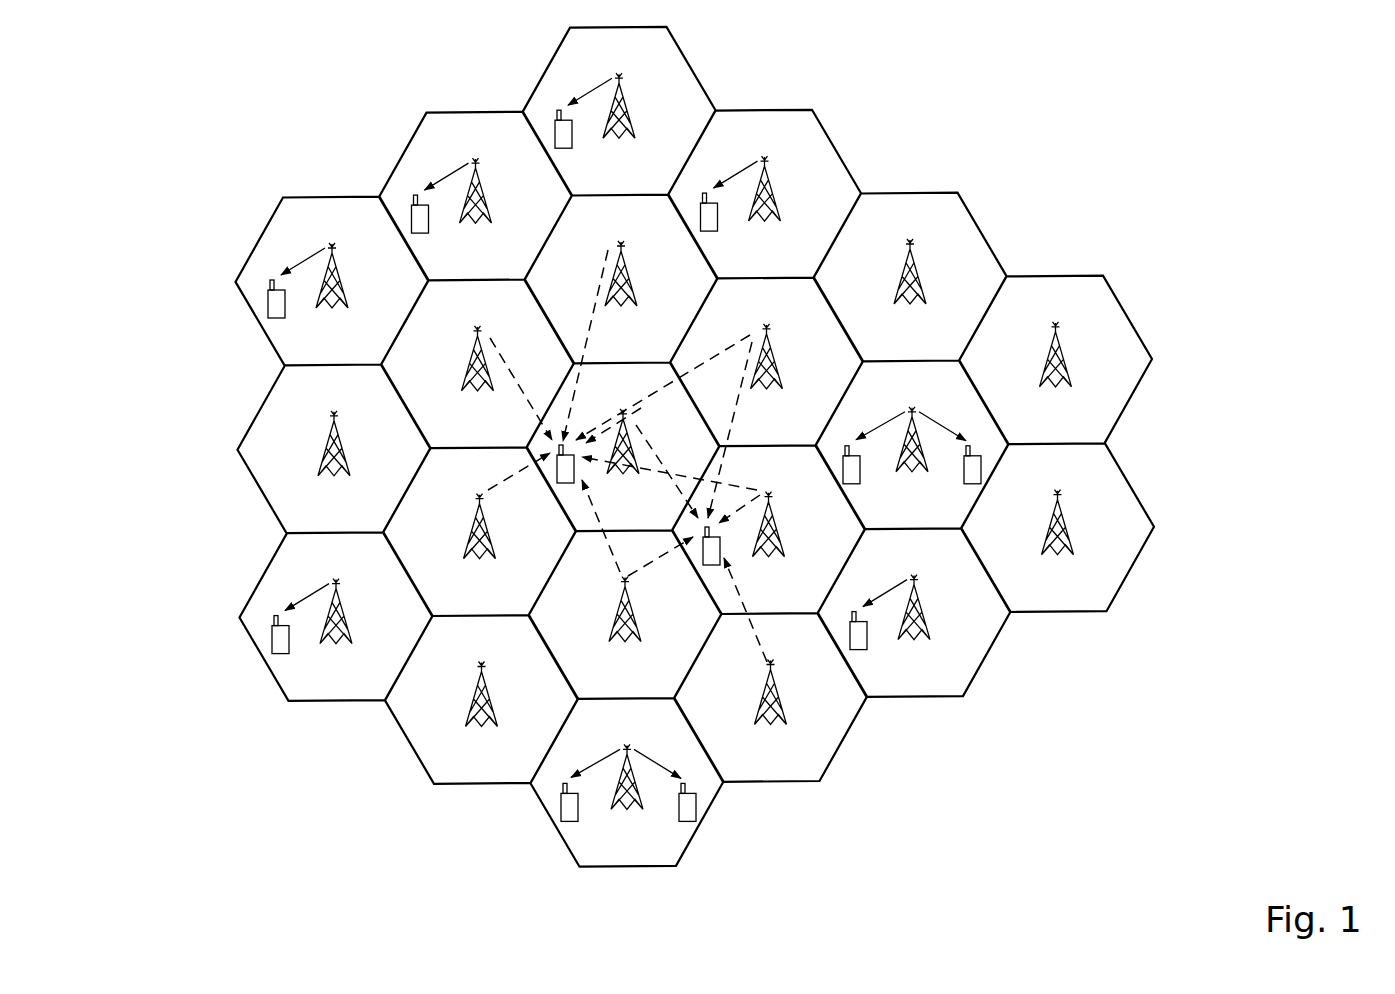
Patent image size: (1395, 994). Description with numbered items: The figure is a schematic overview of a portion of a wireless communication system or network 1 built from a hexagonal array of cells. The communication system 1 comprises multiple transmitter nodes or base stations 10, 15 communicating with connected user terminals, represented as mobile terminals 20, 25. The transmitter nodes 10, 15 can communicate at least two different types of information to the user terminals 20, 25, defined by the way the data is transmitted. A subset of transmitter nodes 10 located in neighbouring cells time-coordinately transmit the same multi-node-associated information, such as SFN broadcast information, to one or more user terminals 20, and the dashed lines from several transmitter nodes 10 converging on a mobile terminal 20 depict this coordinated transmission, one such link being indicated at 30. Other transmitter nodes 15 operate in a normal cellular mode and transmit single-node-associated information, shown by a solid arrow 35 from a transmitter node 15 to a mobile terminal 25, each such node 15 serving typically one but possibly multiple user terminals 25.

The communication system 1 is at (210, 800).
The transmitter node 10 is at (638, 304).
The transmitter node 15 is at (624, 97).
The mobile terminal 20 is at (555, 483).
The mobile terminal 25 is at (266, 312).
The communication link 30 is at (512, 375).
The communication link 35 is at (294, 262).